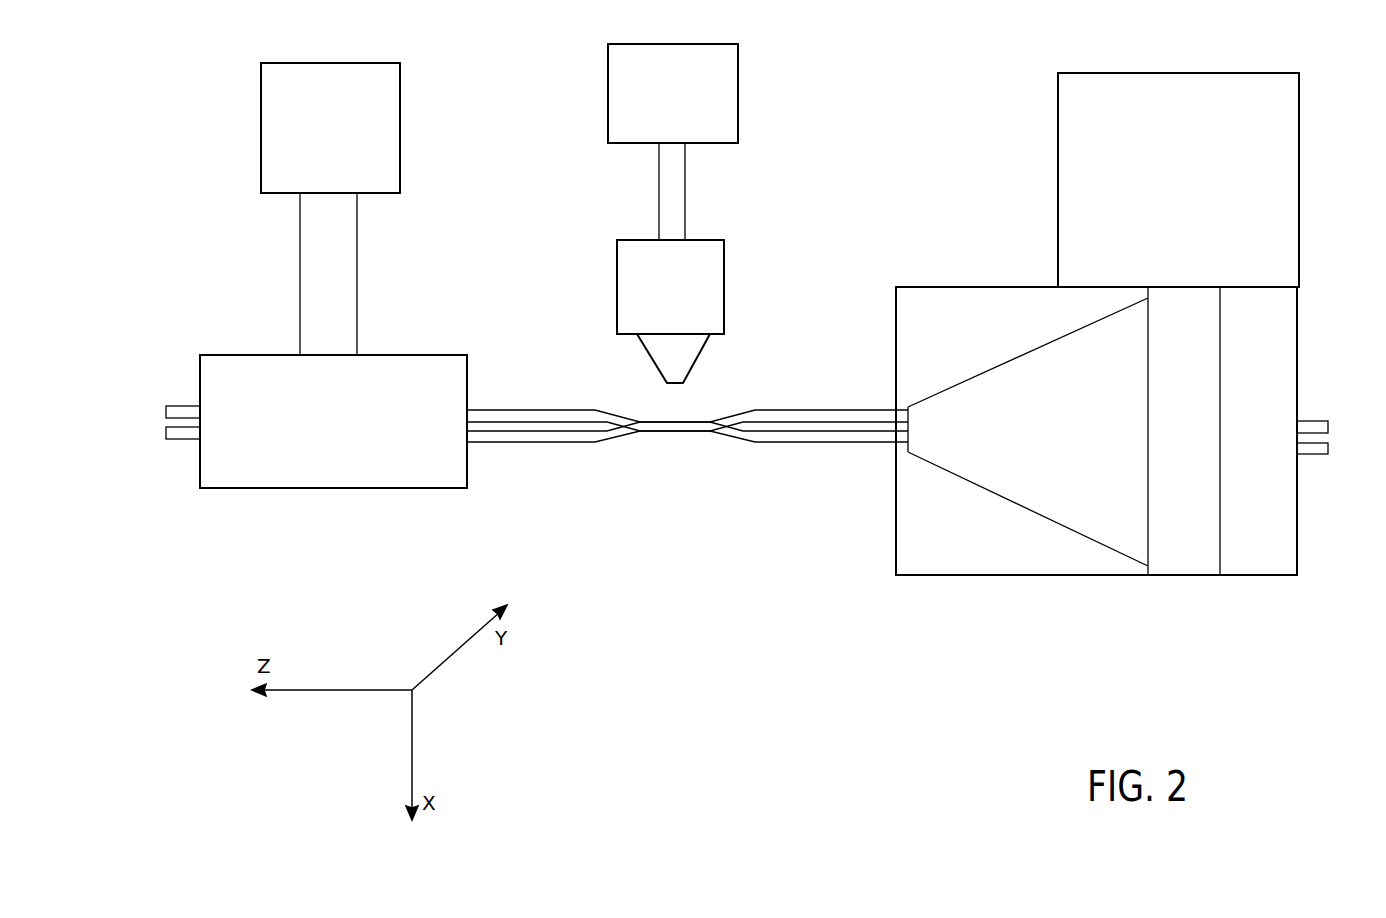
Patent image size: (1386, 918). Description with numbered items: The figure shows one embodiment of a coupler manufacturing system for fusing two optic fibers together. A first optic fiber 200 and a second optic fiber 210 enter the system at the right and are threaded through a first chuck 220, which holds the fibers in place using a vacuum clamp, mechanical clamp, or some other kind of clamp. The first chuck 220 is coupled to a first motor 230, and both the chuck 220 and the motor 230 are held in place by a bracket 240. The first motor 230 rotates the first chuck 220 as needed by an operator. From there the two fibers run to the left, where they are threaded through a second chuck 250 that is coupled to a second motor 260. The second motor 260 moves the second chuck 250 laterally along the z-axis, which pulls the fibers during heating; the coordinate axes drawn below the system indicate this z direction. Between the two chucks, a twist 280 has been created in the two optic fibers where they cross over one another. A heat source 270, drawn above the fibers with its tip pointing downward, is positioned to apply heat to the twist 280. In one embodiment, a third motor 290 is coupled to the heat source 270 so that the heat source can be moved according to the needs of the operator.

The first optic fiber 200 is at (1311, 415).
The second optic fiber 210 is at (1311, 456).
The first chuck 220 is at (987, 380).
The first motor 230 is at (1077, 70).
The bracket 240 is at (916, 284).
The second chuck 250 is at (236, 354).
The second motor 260 is at (275, 62).
The heat source 270 is at (630, 238).
The twist 280 is at (652, 436).
The third motor 290 is at (615, 43).